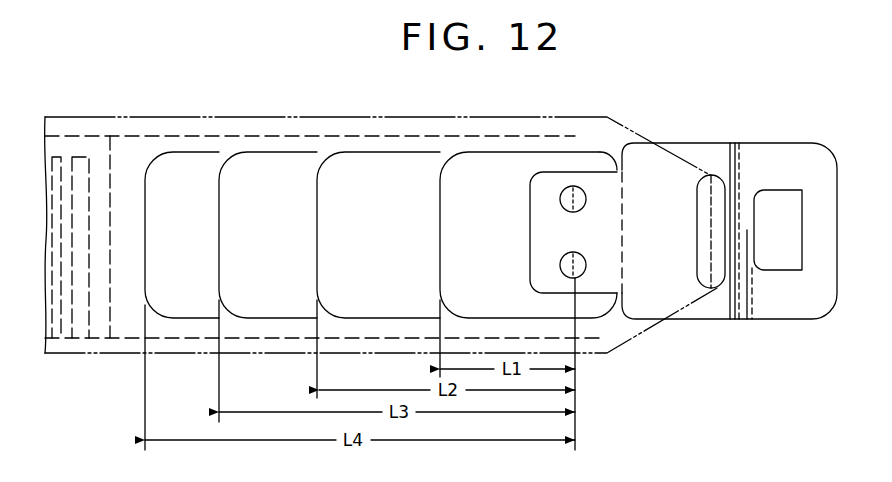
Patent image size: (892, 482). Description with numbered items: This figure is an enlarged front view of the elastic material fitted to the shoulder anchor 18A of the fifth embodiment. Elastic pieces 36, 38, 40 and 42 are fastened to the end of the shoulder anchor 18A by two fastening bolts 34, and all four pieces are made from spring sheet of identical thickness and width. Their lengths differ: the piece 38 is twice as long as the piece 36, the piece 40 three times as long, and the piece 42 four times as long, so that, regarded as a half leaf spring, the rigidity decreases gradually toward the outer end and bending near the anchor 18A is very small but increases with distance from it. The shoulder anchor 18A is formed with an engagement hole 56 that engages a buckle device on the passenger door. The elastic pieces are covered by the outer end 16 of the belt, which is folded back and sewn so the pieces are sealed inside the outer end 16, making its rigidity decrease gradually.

The outer end 16 is at (122, 355).
The shoulder anchor 18A is at (715, 152).
The fastening bolts 34 is at (586, 199).
The elastic piece 36 is at (470, 251).
The elastic piece 38 is at (366, 251).
The elastic piece 40 is at (251, 251).
The elastic piece 42 is at (161, 251).
The engagement hole 56 is at (800, 197).